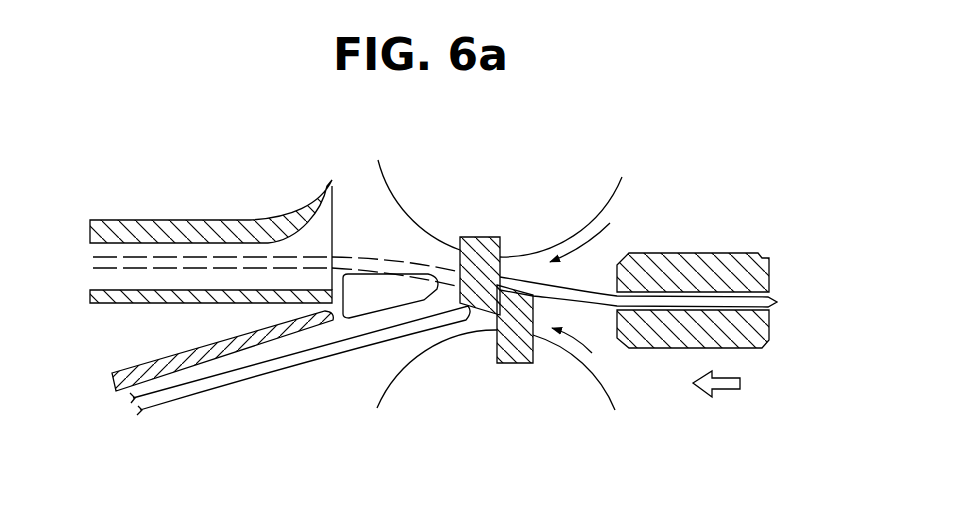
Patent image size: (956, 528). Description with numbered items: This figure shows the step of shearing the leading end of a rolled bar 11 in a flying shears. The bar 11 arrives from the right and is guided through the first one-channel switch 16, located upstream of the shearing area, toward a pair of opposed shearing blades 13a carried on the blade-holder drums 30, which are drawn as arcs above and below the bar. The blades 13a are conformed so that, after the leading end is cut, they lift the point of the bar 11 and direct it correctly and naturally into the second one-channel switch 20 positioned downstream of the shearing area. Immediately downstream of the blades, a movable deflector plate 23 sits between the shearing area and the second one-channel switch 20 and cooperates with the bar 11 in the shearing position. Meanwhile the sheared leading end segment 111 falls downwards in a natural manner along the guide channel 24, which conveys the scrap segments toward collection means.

The second one-channel switch 20 is at (178, 212).
The bar 11 is at (233, 262).
The movable deflector plate 23 is at (375, 288).
The opposed shearing blades 13a is at (480, 255).
The blade-holder drums 30 is at (616, 185).
The first one-channel switch 16 is at (701, 236).
The guide channel 24 is at (163, 365).
The sheared leading end segment 111 is at (206, 382).